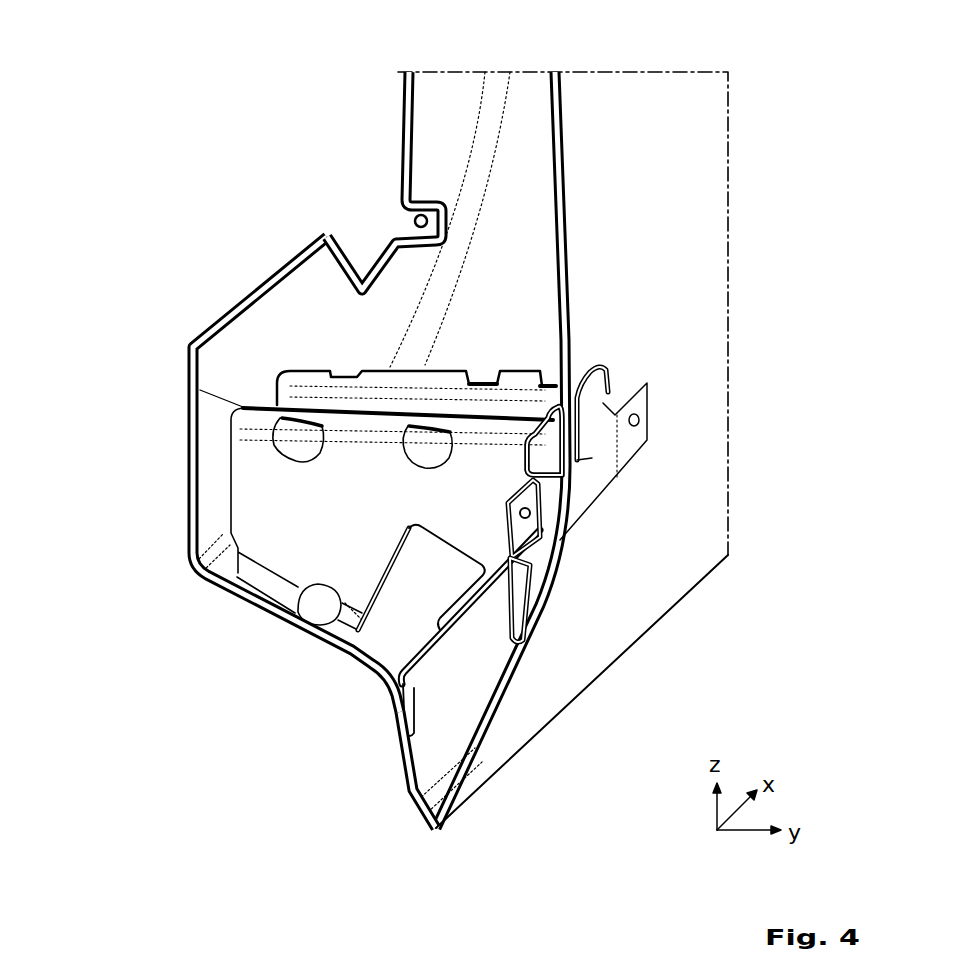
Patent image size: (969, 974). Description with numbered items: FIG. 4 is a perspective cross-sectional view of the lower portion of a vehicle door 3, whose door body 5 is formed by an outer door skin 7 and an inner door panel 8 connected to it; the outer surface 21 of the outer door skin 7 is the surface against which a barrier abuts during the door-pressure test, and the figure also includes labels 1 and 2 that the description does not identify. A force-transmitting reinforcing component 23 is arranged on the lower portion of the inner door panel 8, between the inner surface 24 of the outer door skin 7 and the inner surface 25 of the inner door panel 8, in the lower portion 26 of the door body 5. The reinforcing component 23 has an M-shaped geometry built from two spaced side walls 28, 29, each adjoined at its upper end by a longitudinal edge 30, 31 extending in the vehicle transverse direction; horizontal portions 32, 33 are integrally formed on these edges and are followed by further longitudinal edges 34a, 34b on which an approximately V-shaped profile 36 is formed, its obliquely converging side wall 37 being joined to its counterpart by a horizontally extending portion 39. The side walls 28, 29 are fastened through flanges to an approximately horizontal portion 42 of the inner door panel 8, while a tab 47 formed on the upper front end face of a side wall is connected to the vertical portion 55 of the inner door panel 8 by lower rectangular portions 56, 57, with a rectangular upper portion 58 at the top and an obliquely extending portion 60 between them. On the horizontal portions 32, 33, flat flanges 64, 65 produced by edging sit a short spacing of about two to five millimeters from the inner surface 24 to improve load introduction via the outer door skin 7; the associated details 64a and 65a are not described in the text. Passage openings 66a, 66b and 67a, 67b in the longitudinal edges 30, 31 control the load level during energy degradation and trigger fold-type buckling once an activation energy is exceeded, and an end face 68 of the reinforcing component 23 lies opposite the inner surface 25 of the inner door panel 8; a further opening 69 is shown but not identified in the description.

The vehicle 1 is at (535, 424).
The vehicle body 2 is at (535, 424).
The vehicle door 3 is at (419, 424).
The door body 5 is at (419, 424).
The outer door skin 7 is at (657, 147).
The inner door panel 8 is at (419, 424).
The outer surface 21 is at (535, 424).
The reinforcing component 23 is at (274, 328).
The inner surface of the outer door skin 24 is at (398, 757).
The inner surface of the inner door panel 25 is at (262, 330).
The lower portion of the door body 26 is at (283, 673).
The side wall 28 is at (245, 520).
The side wall 29 is at (369, 206).
The longitudinal edge 30 is at (230, 421).
The longitudinal edge 31 is at (530, 370).
The horizontal portion 32 is at (250, 407).
The horizontal portion 33 is at (313, 370).
The longitudinal edge 34a is at (200, 387).
The longitudinal edge 34b is at (234, 316).
The V-shaped profile 36 is at (629, 617).
The side wall of the V-shaped profile 37 is at (573, 447).
The horizontally extending portion 39 is at (580, 457).
The approximately horizontal portion of the inner door panel 42 is at (264, 618).
The tab 47 is at (580, 637).
The vertical portion of the inner door panel 55 is at (408, 790).
The rectangular portion 56 is at (415, 713).
The rectangular portion 57 is at (517, 603).
The rectangular upper portion 58 is at (533, 520).
The obliquely extending portion 60 is at (435, 646).
The flat flange 64 is at (696, 461).
The plate hole 64a is at (577, 418).
The flat flange 65 is at (705, 413).
The hook tab 65a is at (607, 370).
The passage opening 66a is at (293, 449).
The passage opening 66b is at (423, 453).
The passage opening 67a is at (358, 372).
The passage opening 67b is at (487, 377).
The end face 68 is at (230, 493).
The lower opening 69 is at (317, 607).